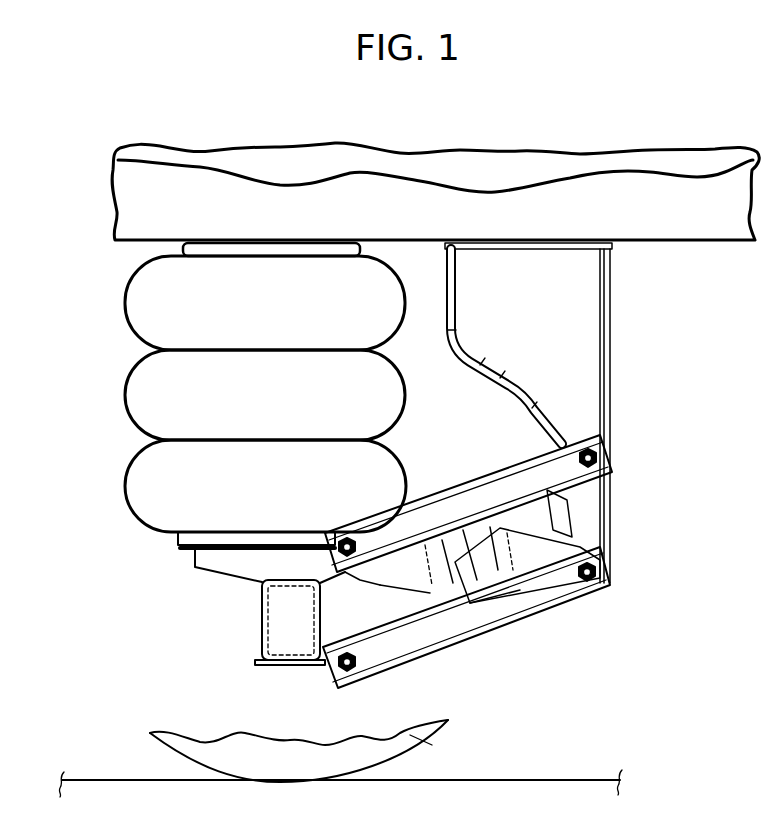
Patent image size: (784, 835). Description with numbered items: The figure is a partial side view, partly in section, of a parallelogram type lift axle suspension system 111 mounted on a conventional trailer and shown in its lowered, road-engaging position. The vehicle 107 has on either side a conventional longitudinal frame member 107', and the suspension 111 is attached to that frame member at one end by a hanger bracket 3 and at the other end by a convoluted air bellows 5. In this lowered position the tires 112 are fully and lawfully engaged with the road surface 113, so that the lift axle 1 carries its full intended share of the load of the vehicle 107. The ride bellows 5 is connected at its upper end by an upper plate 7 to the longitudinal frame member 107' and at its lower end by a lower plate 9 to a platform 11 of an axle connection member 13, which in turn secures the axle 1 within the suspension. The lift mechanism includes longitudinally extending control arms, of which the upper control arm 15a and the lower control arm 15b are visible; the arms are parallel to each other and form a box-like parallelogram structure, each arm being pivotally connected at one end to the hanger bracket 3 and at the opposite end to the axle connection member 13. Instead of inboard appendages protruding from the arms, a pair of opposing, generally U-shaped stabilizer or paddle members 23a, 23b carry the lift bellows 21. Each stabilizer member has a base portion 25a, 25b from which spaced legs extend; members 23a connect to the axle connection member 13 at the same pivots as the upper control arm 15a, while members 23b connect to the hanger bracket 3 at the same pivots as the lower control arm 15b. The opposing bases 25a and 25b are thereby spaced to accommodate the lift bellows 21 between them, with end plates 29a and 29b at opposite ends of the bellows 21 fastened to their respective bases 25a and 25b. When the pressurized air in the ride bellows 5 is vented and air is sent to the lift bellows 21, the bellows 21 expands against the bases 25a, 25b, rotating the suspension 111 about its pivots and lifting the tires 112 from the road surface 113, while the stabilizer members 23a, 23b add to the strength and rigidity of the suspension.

The vehicle 107 is at (435, 178).
The longitudinal frame member 107' is at (435, 151).
The upper plate 7 is at (316, 243).
The air bellows 5 is at (150, 475).
The hanger bracket 3 is at (583, 297).
The lower plate 9 is at (185, 545).
The platform 11 is at (185, 553).
The axle connection member 13 is at (225, 565).
The lift axle 1 is at (262, 618).
The upper control arm 15a is at (428, 498).
The lower control arm 15b is at (565, 592).
The lift bellows 21 is at (485, 600).
The stabilizer member 23a is at (395, 640).
The stabilizer member 23b is at (595, 500).
The base portion 25a is at (453, 540).
The base portion 25b is at (490, 527).
The end plate 29a is at (445, 600).
The end plate 29b is at (510, 590).
The lift axle suspension system 111 is at (643, 514).
The tires 112 is at (435, 736).
The road surface 113 is at (565, 780).